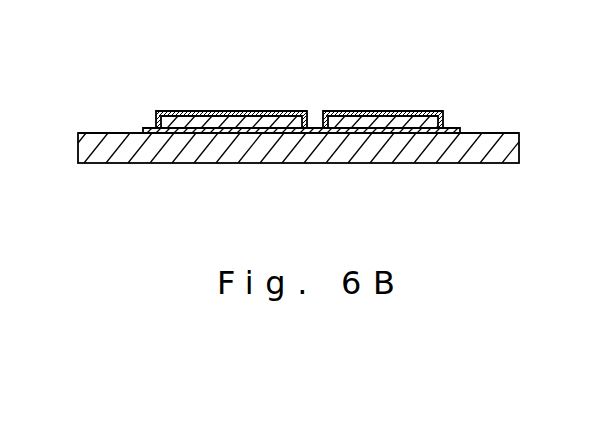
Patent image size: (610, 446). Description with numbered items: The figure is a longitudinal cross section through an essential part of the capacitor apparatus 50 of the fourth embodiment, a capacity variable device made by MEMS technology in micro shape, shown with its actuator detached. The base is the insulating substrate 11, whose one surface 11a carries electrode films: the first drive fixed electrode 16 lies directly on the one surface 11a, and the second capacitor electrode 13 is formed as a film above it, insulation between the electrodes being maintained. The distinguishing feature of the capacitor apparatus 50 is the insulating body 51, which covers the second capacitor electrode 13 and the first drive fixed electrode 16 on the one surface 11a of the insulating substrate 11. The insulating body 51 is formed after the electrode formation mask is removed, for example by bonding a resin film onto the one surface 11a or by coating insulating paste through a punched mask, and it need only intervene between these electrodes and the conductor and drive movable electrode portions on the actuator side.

The capacitor apparatus 50 is at (198, 95).
The insulating body 51 is at (293, 110).
The insulating substrate 11 is at (483, 155).
The one surface 11a is at (490, 133).
The first drive fixed electrode 16 is at (215, 131).
The second capacitor electrode 13 is at (373, 120).